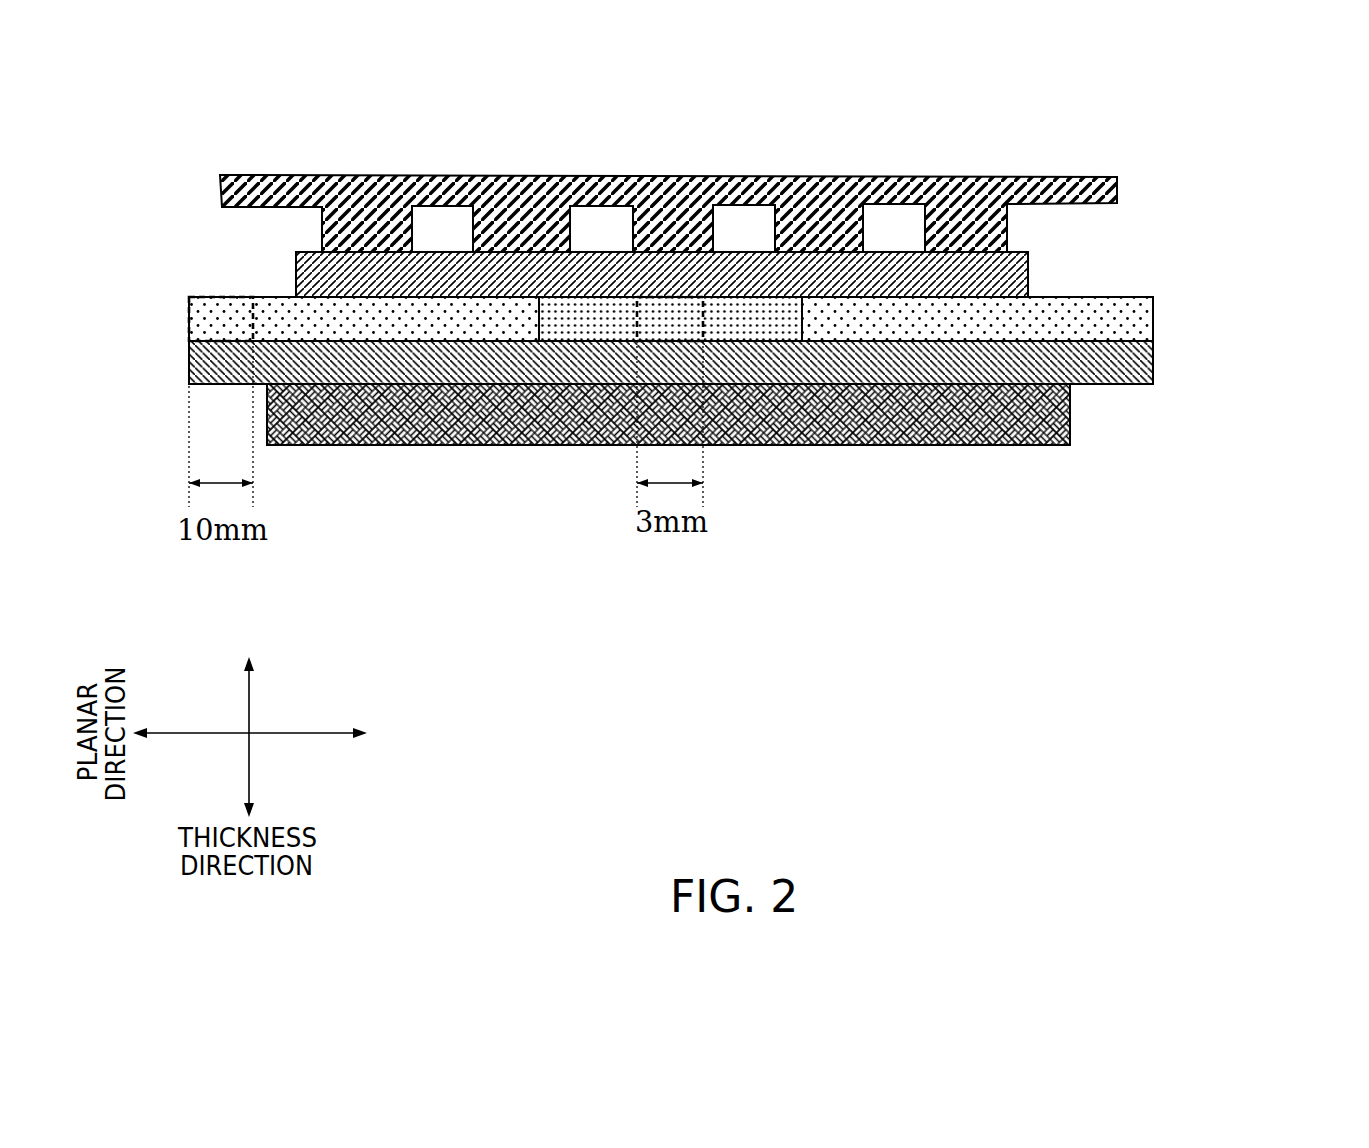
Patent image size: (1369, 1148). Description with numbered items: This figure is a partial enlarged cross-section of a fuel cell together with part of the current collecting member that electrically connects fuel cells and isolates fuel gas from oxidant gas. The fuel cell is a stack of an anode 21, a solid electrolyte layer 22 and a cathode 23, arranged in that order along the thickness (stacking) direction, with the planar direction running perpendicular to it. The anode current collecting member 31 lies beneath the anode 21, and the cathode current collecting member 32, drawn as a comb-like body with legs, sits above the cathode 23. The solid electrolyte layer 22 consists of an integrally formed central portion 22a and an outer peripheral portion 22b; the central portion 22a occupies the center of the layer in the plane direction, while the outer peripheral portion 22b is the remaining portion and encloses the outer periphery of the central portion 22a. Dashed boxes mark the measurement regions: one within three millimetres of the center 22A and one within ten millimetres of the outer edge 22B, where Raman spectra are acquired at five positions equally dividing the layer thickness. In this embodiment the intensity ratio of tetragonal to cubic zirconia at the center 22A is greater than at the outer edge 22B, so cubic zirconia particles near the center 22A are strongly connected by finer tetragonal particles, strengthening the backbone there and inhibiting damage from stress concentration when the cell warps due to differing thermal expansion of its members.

The anode 21 is at (1153, 360).
The solid electrolyte layer 22 is at (665, 394).
The central portion 22a is at (745, 325).
The outer peripheral portion 22b is at (495, 323).
The center 22A is at (671, 288).
The outer edge 22B is at (192, 288).
The cathode 23 is at (1028, 268).
The anode current collecting member 31 is at (1070, 421).
The cathode current collecting member 32 is at (1117, 190).